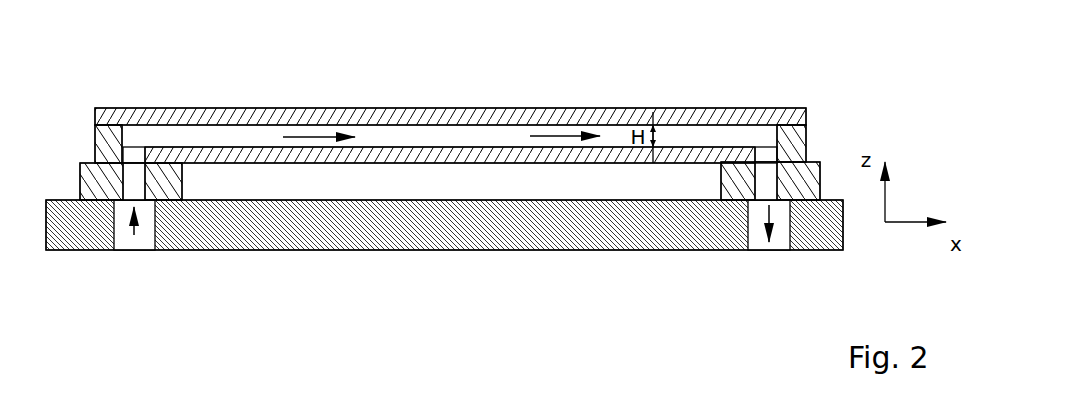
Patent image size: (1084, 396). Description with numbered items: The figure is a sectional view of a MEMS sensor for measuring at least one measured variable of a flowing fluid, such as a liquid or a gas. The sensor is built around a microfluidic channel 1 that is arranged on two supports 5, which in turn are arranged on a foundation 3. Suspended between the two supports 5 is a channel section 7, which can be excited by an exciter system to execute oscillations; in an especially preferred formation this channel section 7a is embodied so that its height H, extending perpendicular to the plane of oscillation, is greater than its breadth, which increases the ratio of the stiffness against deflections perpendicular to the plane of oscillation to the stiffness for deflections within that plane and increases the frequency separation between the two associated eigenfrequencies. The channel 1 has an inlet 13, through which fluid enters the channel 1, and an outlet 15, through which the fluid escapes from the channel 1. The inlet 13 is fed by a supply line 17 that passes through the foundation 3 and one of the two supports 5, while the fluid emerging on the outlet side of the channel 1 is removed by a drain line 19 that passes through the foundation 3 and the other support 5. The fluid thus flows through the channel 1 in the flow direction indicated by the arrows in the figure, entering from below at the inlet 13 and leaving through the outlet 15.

The microfluidic channel 1 is at (256, 101).
The foundation 3 is at (373, 238).
The supports 5 is at (92, 167).
The channel section 7 is at (450, 90).
The channel section 7a is at (360, 120).
The inlet 13 is at (133, 158).
The outlet 15 is at (800, 123).
The supply line 17 is at (130, 200).
The drain line 19 is at (777, 200).